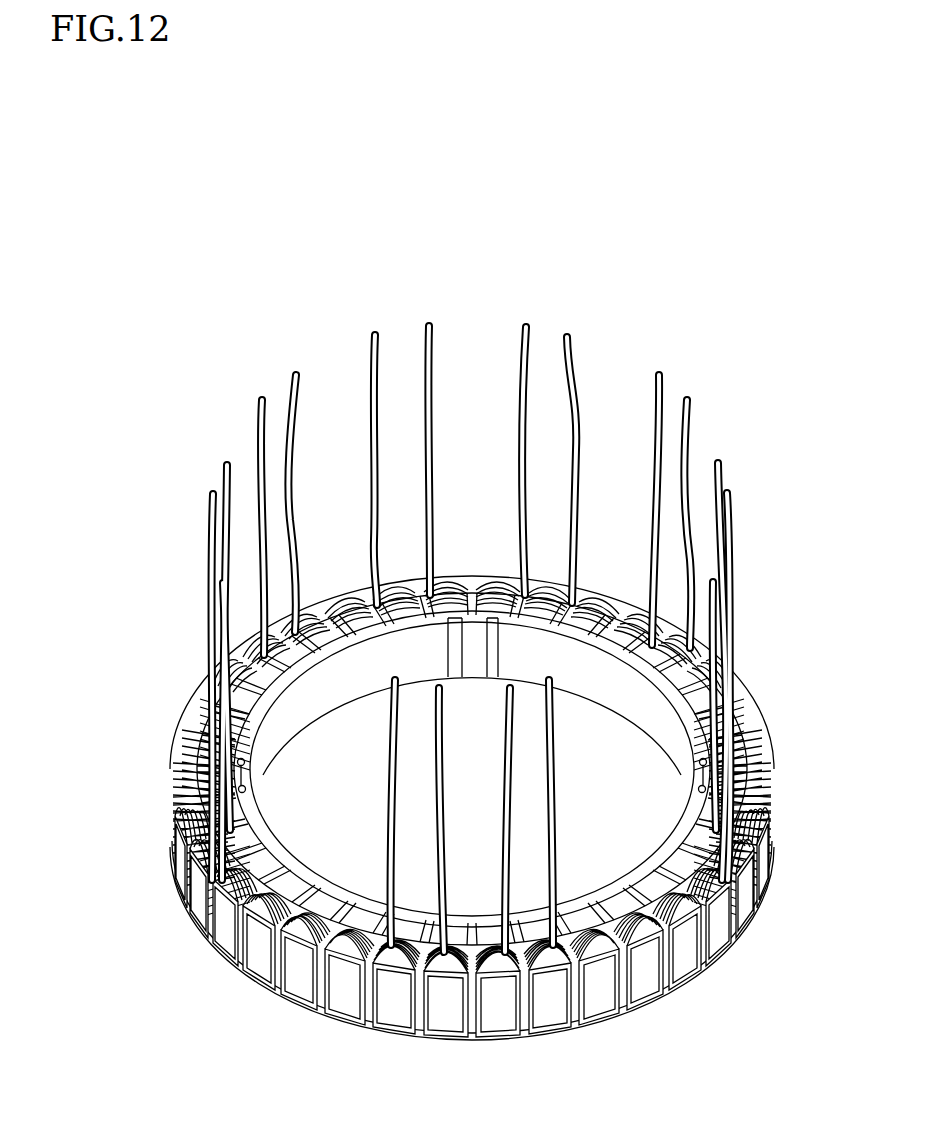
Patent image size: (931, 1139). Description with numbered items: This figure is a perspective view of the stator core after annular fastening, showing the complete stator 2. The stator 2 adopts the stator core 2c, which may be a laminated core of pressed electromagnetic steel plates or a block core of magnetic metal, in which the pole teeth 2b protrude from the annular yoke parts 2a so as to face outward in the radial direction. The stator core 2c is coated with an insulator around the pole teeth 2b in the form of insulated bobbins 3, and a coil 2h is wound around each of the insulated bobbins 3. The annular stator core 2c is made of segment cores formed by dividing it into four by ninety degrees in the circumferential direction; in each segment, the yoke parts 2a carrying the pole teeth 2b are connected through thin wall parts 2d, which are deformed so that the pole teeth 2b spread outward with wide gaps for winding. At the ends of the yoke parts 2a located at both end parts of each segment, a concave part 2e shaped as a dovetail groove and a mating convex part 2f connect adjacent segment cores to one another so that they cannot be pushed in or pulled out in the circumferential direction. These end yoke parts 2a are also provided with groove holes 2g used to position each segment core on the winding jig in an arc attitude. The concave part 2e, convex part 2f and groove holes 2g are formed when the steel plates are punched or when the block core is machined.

The stator 2 is at (238, 405).
The yoke parts 2a is at (590, 670).
The pole teeth 2b is at (498, 1018).
The stator core 2c is at (290, 1006).
The thin wall parts 2d is at (622, 648).
The concave part 2e is at (490, 617).
The convex part 2f is at (461, 617).
The groove holes 2g is at (243, 789).
The coil 2h is at (552, 985).
The insulated bobbins 3 is at (440, 1036).